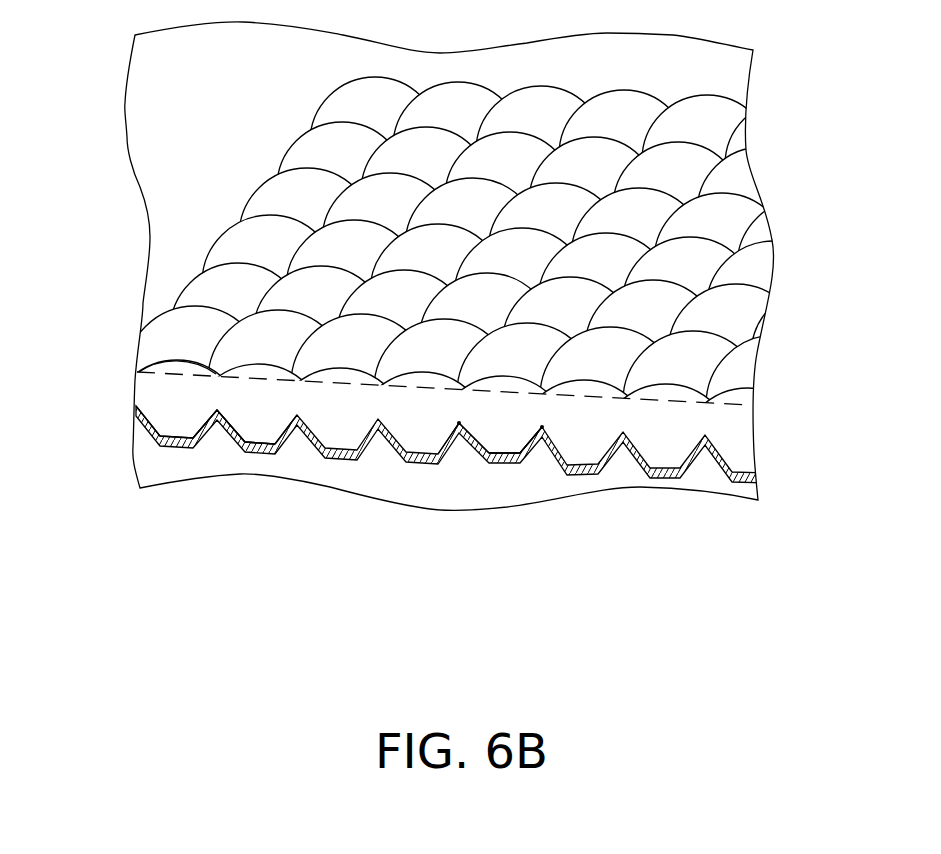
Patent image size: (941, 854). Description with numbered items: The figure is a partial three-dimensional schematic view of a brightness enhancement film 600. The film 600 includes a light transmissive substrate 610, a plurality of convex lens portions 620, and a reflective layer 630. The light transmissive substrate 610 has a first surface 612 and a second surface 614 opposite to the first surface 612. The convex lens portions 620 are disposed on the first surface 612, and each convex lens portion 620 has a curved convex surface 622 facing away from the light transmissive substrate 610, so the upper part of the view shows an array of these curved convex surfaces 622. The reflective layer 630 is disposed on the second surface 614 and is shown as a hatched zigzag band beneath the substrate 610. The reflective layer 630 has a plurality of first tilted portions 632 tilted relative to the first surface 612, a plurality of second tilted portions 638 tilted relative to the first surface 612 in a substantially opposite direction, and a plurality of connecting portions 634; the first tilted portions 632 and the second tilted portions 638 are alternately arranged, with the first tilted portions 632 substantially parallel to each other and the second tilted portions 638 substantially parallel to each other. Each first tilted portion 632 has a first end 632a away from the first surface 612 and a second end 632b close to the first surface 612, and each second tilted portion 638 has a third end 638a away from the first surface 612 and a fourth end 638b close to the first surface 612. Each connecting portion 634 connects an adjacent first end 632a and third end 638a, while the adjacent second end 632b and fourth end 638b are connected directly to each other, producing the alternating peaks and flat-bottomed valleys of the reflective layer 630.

The brightness enhancement film 600 is at (805, 356).
The light transmissive substrate 610 is at (166, 404).
The first surface 612 is at (189, 378).
The second surface 614 is at (177, 430).
The convex lens portion 620 is at (177, 362).
The curved convex surface 622 is at (212, 273).
The reflective layer 630 is at (150, 436).
The first tilted portion 632 is at (232, 435).
The first end 632a is at (498, 453).
The second end 632b is at (458, 424).
The connecting portion 634 is at (255, 446).
The second tilted portion 638 is at (292, 439).
The third end 638a is at (533, 444).
The fourth end 638b is at (544, 428).